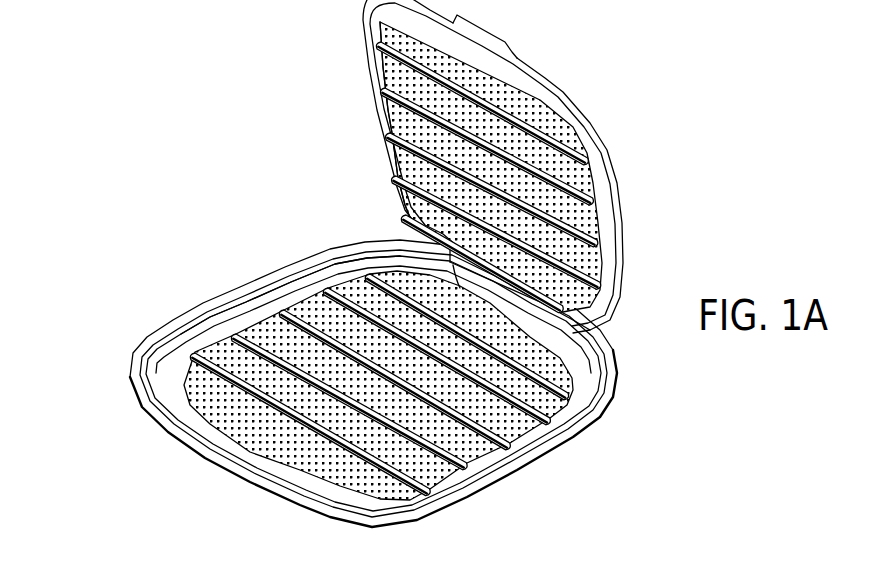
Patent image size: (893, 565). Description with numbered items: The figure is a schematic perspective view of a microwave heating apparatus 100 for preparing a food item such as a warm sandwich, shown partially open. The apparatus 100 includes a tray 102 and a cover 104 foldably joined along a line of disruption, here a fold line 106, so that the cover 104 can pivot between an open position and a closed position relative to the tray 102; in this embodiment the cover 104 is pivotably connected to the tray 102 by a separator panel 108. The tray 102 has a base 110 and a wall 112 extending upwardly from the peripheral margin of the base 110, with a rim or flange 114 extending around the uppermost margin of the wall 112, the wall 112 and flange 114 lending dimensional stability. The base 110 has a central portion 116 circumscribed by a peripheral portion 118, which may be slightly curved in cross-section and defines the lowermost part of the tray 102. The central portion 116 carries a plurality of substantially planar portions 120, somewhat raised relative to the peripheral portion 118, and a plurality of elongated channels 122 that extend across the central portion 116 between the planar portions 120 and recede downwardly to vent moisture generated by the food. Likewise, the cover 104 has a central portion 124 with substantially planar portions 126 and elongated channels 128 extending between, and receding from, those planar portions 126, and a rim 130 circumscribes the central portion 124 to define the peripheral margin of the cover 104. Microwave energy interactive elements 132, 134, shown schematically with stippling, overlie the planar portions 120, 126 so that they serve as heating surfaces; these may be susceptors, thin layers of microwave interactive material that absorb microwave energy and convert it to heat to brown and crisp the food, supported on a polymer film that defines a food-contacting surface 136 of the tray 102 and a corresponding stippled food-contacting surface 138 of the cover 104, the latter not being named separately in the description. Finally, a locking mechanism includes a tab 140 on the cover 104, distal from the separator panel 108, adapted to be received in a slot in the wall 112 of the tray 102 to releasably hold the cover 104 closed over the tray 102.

The microwave heating apparatus 100 is at (663, 88).
The tray 102 is at (245, 214).
The cover 104 is at (313, 47).
The fold line 106 is at (596, 333).
The separator panel 108 is at (472, 260).
The base 110 is at (172, 403).
The wall 112 is at (257, 303).
The flange 114 is at (524, 460).
The central portion 116 is at (228, 442).
The peripheral portion 118 is at (170, 387).
The planar portions 120 is at (198, 377).
The channels 122 is at (552, 420).
The central portion 124 is at (600, 222).
The planar portions 126 is at (384, 68).
The channels 128 is at (390, 94).
The rim 130 is at (598, 138).
The microwave energy interactive element 132 is at (372, 288).
The microwave energy interactive element 134 is at (396, 151).
The food-contacting surface 136 is at (469, 340).
The lid textured surface 138 is at (546, 117).
The tab 140 is at (488, 34).